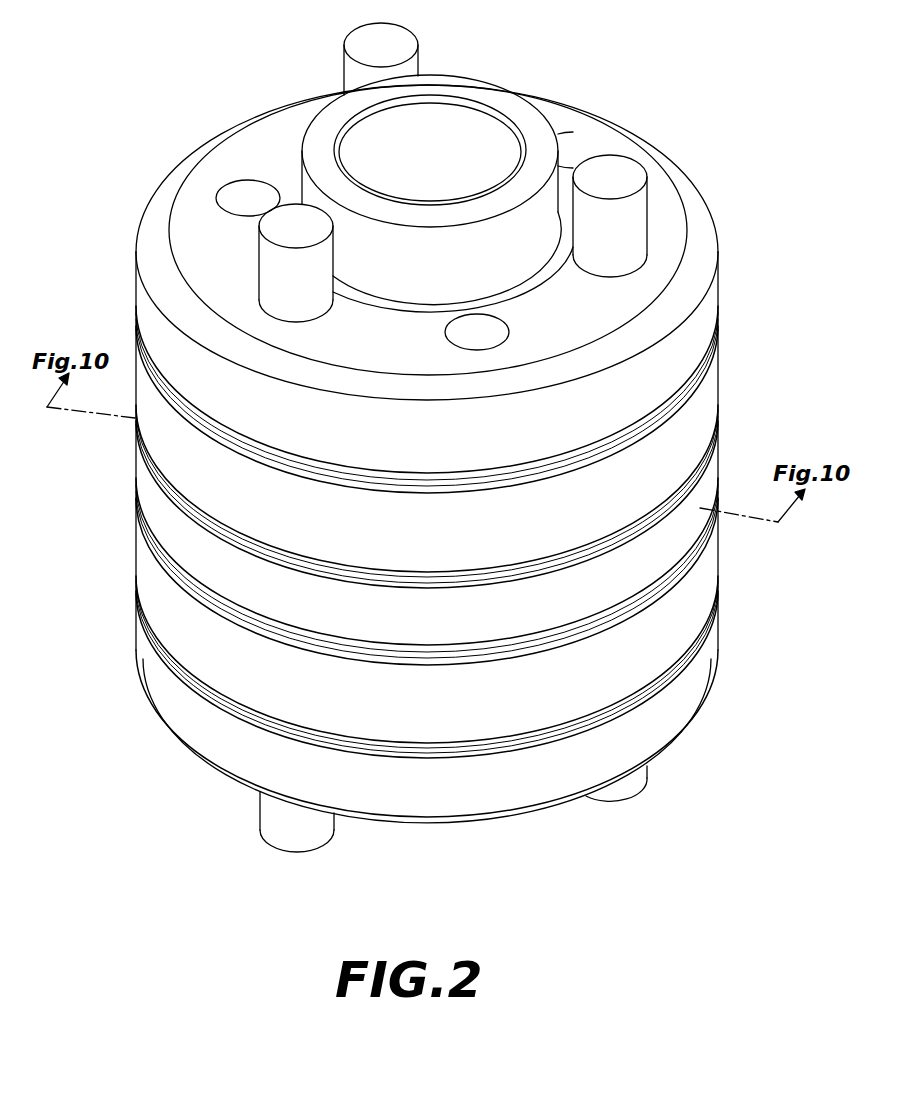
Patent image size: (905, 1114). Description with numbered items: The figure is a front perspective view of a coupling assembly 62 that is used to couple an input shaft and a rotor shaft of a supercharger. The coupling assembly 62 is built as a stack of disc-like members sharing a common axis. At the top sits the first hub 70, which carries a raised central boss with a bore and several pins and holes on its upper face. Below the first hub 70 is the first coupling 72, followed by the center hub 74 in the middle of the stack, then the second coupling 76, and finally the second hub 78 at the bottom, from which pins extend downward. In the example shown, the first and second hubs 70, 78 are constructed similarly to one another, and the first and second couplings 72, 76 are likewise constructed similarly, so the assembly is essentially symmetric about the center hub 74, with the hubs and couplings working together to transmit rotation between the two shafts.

The coupling assembly 62 is at (459, 432).
The first hub 70 is at (693, 337).
The first coupling 72 is at (697, 425).
The center hub 74 is at (657, 542).
The second coupling 76 is at (700, 597).
The second hub 78 is at (697, 673).